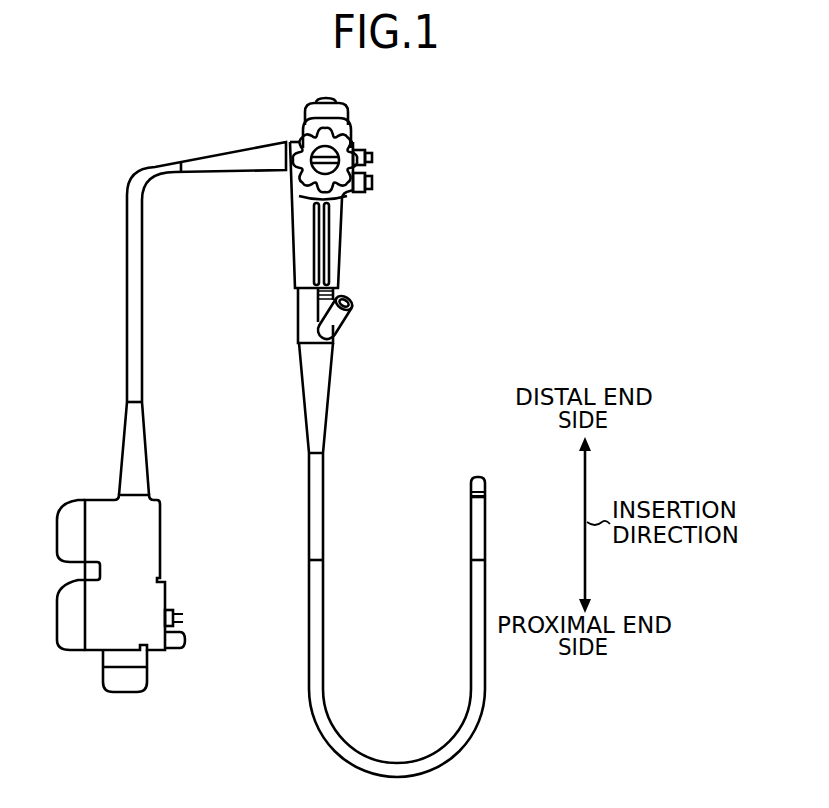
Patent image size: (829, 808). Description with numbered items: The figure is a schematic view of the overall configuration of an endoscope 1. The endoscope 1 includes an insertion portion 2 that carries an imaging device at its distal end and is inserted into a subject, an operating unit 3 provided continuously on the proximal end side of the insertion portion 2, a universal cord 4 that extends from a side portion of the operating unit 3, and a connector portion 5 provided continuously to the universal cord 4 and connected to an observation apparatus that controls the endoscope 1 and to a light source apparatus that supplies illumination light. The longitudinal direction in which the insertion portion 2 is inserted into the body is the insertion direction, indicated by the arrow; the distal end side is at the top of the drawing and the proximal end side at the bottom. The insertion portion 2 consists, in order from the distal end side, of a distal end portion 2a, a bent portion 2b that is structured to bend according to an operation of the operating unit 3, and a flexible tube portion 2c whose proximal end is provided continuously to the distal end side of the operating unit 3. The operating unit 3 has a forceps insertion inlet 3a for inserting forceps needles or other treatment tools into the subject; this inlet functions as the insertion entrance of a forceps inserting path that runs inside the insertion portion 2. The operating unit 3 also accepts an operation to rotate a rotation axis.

The endoscope 1 is at (388, 396).
The insertion portion 2 is at (383, 742).
The distal end portion 2a is at (495, 481).
The bent portion 2b is at (486, 528).
The flexible tube portion 2c is at (486, 648).
The operating unit 3 is at (262, 310).
The forceps insertion inlet 3a is at (337, 320).
The universal cord 4 is at (142, 177).
The connector portion 5 is at (147, 537).